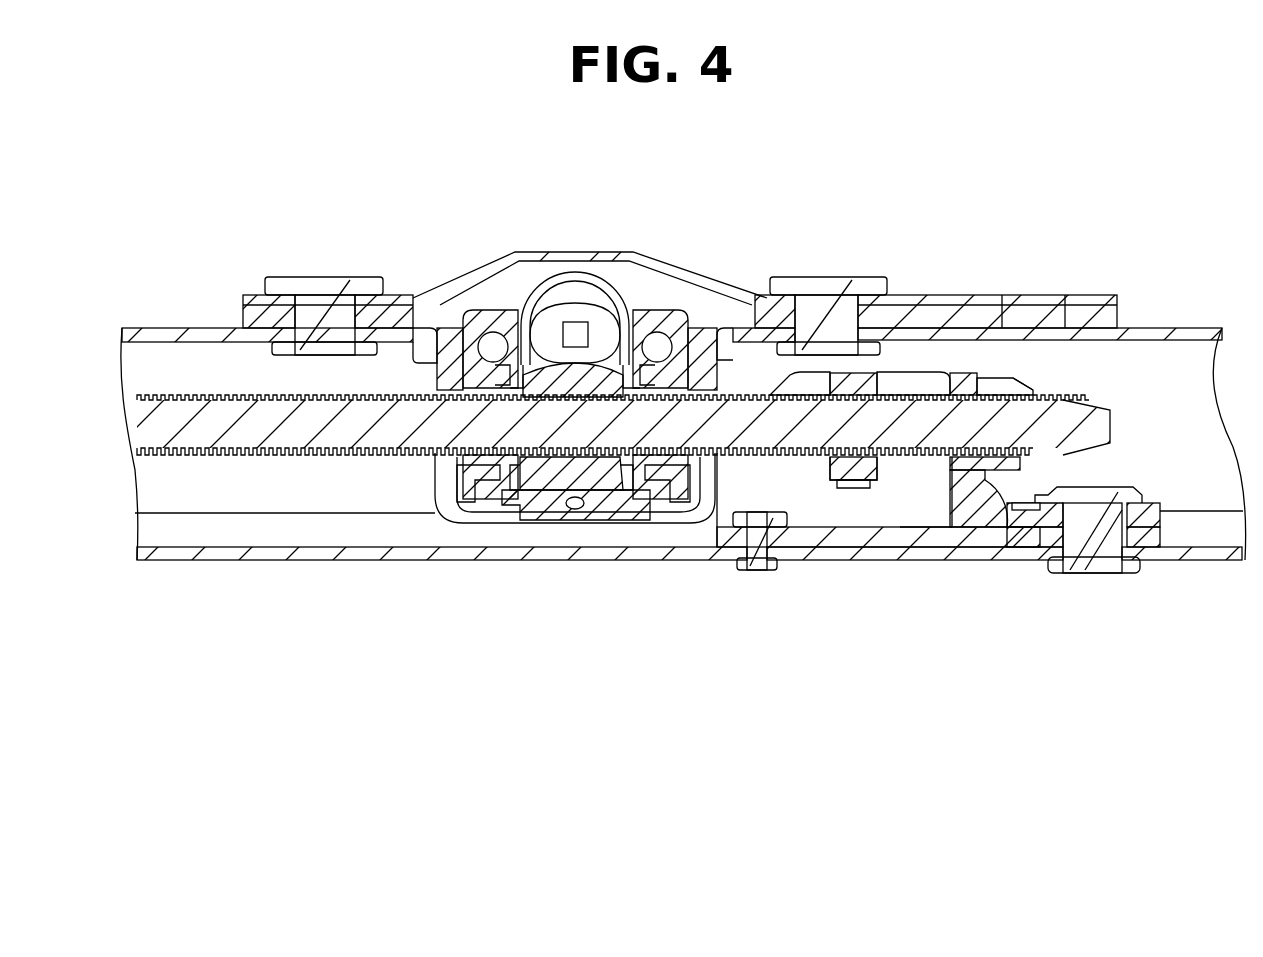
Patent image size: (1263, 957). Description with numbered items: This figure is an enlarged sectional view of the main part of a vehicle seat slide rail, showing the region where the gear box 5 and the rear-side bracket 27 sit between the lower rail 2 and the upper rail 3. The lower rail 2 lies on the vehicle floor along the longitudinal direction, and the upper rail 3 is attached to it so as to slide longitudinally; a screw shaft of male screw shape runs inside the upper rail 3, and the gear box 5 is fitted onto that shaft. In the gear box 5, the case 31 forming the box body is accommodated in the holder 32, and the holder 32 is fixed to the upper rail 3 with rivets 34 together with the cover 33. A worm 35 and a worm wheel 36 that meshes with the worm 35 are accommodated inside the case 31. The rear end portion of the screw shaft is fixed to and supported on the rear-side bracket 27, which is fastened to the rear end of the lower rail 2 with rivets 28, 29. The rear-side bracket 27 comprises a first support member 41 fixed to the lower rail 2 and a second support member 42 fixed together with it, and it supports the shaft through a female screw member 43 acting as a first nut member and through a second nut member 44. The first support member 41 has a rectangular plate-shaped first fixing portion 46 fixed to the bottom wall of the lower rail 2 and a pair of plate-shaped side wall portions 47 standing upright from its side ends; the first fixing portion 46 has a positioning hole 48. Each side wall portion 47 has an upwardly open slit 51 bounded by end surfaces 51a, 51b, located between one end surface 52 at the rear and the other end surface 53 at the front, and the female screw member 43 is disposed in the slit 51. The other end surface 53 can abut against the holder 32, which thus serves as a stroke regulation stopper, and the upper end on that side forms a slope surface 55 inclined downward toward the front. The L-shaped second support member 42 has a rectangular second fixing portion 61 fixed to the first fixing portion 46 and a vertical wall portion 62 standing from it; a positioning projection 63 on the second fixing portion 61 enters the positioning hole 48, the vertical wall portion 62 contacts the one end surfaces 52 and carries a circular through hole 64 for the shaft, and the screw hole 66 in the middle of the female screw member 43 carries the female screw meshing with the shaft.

The lower rail 2 is at (1205, 560).
The upper rail 3 is at (160, 328).
The gear box 5 is at (655, 285).
The rear-side bracket 27 is at (962, 412).
The rivet 28 is at (1100, 573).
The rivet 29 is at (762, 552).
The case 31 is at (482, 322).
The holder 32 is at (665, 516).
The cover 33 is at (517, 254).
The rivet 34 is at (318, 298).
The worm 35 is at (577, 302).
The worm wheel 36 is at (562, 475).
The first support member 41 is at (920, 547).
The second support member 42 is at (988, 485).
The female screw member 43 is at (862, 490).
The second nut member 44 is at (1018, 382).
The first fixing portion 46 is at (1150, 548).
The side wall portion 47 is at (930, 510).
The positioning hole 48 is at (1017, 547).
The slit 51 is at (845, 482).
The end surface 51a is at (917, 345).
The end surface 51b is at (850, 373).
The one end surface 52 is at (975, 522).
The other end surface 53 is at (707, 522).
The slope surface 55 is at (758, 328).
The second fixing portion 61 is at (1150, 510).
The vertical wall portion 62 is at (963, 373).
The positioning projection 63 is at (1030, 520).
The through hole 64 is at (1003, 380).
The screw hole 66 is at (885, 442).